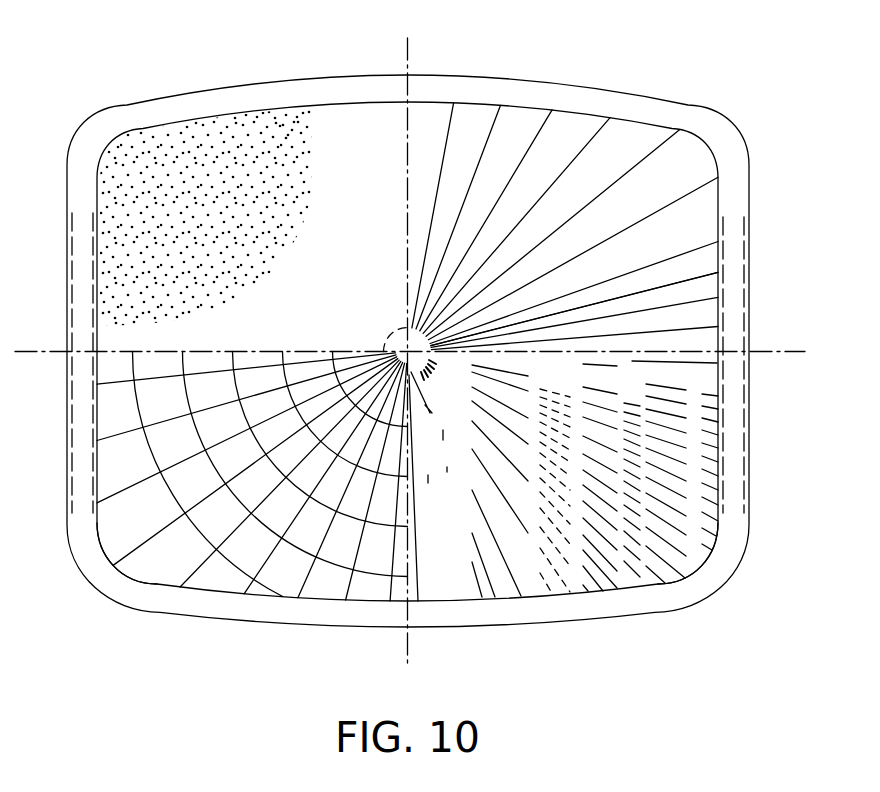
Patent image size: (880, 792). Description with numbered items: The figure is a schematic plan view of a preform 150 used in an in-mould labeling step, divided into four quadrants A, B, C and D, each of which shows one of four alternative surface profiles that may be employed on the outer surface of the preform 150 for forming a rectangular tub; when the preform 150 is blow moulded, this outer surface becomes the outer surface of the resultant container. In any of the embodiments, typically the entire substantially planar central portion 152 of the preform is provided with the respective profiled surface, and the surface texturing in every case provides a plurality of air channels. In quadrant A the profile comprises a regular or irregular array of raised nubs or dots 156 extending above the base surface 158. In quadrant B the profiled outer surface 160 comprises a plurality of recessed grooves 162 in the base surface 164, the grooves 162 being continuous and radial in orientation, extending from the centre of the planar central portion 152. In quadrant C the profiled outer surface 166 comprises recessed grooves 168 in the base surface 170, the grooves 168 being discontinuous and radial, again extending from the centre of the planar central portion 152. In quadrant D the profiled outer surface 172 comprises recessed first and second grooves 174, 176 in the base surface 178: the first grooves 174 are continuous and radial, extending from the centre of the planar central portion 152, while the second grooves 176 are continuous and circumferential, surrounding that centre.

The preform 150 is at (725, 132).
The planar central portion 152 is at (698, 227).
The raised nubs or dots 156 is at (250, 120).
The base surface 158 is at (288, 117).
The profiled outer surface 160 is at (705, 277).
The recessed grooves 162 is at (528, 140).
The base surface 164 is at (699, 314).
The profiled outer surface 166 is at (700, 467).
The recessed grooves 168 is at (675, 522).
The base surface 170 is at (707, 564).
The profiled outer surface 172 is at (108, 545).
The first grooves 174 is at (113, 488).
The second grooves 176 is at (135, 413).
The base surface 178 is at (143, 528).
The quadrant A is at (193, 165).
The quadrant B is at (627, 130).
The quadrant C is at (620, 575).
The quadrant D is at (172, 545).